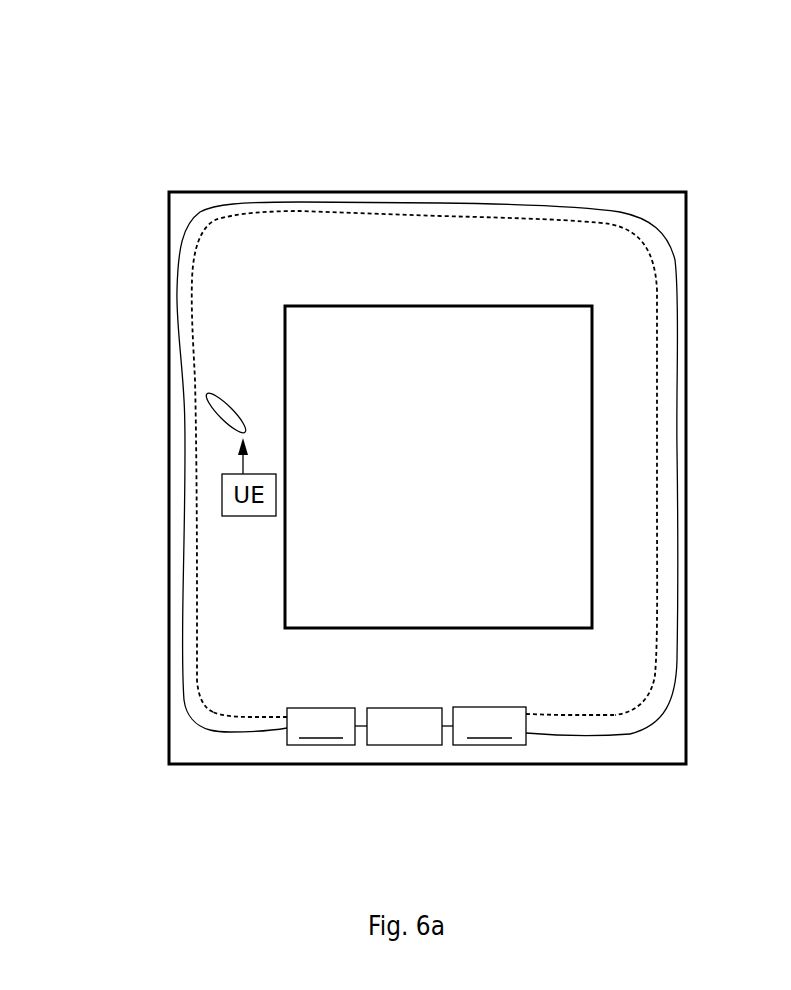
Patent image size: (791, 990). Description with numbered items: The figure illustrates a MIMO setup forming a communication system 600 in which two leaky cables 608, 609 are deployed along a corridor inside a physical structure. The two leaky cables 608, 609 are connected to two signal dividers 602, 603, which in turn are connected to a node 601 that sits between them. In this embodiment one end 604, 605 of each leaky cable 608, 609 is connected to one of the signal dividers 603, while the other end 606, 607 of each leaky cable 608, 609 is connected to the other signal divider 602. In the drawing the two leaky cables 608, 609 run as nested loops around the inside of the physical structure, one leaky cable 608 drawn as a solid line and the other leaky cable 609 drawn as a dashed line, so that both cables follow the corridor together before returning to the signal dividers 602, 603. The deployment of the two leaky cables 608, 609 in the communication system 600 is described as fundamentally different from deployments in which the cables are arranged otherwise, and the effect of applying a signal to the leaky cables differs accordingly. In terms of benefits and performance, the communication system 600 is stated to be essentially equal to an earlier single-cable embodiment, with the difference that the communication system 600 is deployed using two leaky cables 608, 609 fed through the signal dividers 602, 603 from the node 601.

The communication system 600 is at (180, 130).
The node 601 is at (388, 745).
The signal divider 602 is at (321, 726).
The signal divider 603 is at (489, 726).
The end of leaky cable 604 is at (544, 733).
The end of leaky cable 605 is at (585, 715).
The other end of leaky cable 606 is at (253, 732).
The other end of leaky cable 607 is at (225, 716).
The leaky cable 608 is at (183, 587).
The leaky cable 609 is at (197, 537).